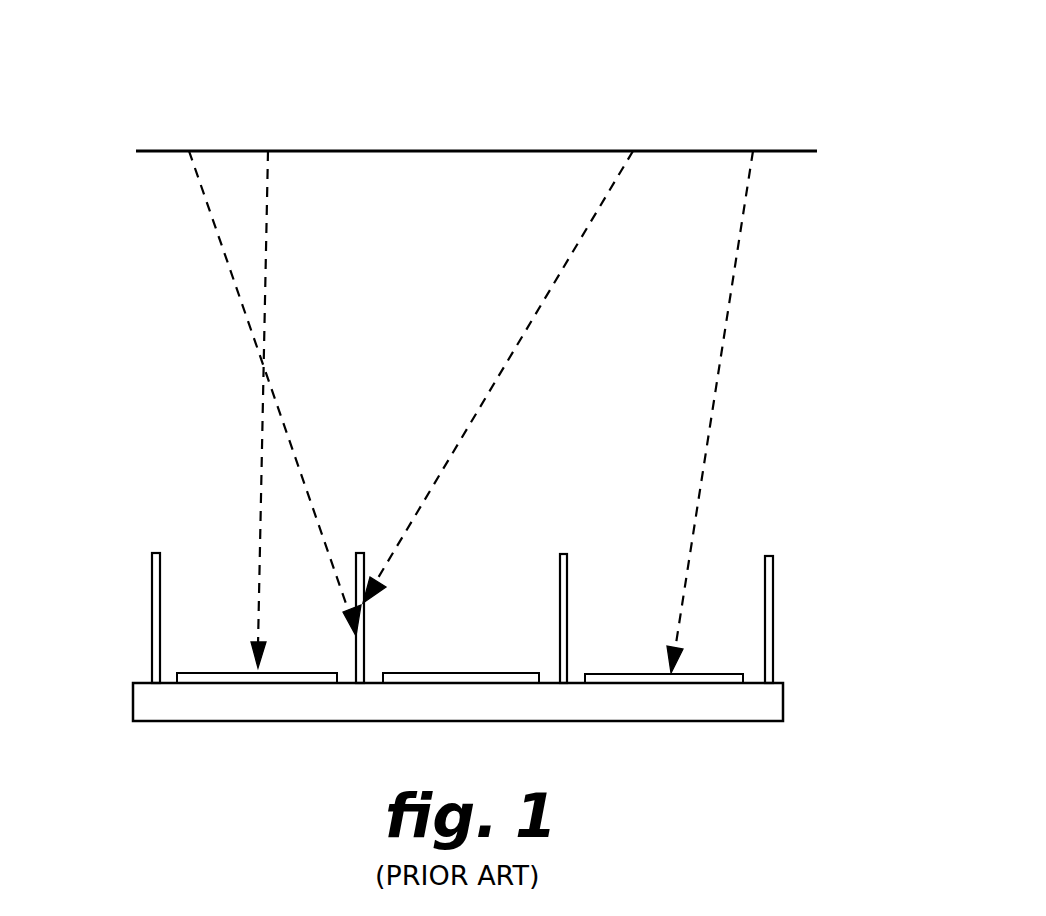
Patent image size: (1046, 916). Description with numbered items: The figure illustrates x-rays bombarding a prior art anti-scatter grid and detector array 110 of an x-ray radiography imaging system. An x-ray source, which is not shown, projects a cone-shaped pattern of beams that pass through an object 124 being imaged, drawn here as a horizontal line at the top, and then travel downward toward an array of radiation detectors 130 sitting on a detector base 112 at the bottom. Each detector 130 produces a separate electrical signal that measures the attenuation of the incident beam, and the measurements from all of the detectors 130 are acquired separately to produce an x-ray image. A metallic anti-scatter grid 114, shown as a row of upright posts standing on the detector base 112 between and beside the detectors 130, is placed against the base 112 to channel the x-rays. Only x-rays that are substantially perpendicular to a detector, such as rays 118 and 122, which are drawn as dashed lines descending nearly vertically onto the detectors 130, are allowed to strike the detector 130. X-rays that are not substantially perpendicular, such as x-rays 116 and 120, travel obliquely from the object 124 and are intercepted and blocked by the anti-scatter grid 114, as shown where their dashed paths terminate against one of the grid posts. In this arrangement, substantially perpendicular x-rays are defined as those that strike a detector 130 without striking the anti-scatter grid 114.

The prior art apparatus 110 is at (772, 39).
The detector base 112 is at (783, 697).
The anti-scatter grid 114 is at (152, 612).
The x-ray 116 is at (230, 273).
The ray 118 is at (267, 260).
The x-ray 120 is at (585, 233).
The ray 122 is at (728, 305).
The object 124 is at (503, 151).
The radiation detector 130 is at (210, 673).